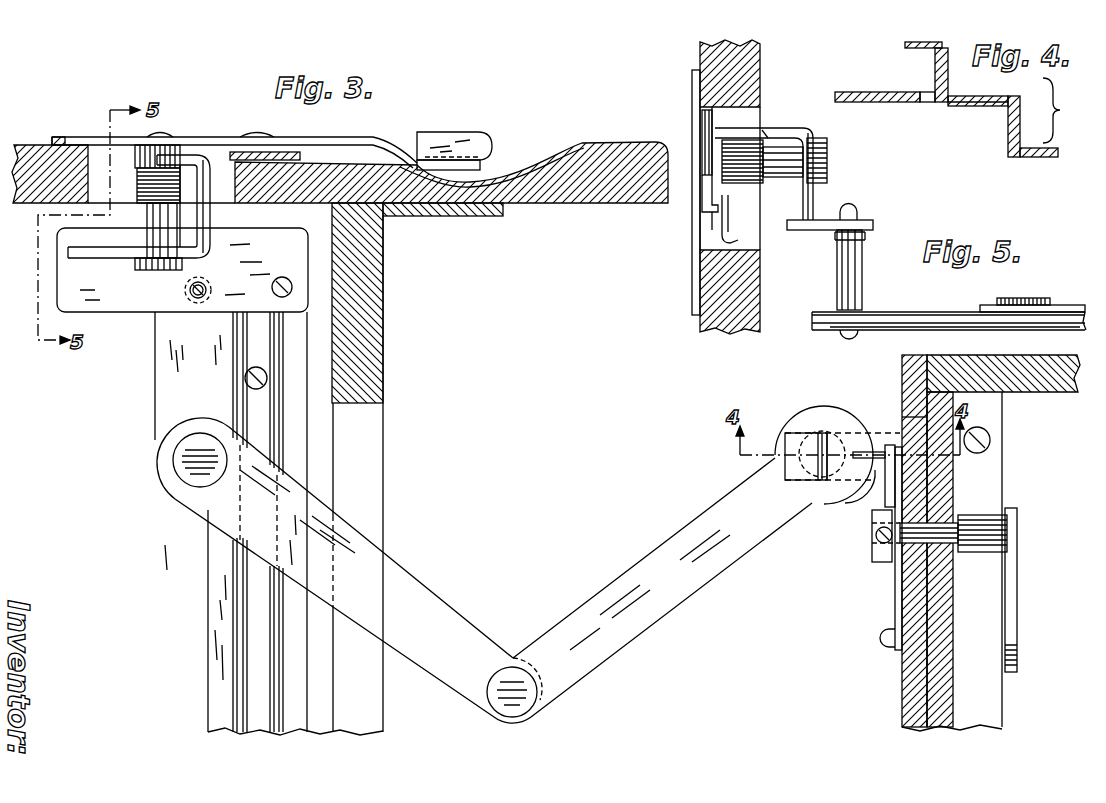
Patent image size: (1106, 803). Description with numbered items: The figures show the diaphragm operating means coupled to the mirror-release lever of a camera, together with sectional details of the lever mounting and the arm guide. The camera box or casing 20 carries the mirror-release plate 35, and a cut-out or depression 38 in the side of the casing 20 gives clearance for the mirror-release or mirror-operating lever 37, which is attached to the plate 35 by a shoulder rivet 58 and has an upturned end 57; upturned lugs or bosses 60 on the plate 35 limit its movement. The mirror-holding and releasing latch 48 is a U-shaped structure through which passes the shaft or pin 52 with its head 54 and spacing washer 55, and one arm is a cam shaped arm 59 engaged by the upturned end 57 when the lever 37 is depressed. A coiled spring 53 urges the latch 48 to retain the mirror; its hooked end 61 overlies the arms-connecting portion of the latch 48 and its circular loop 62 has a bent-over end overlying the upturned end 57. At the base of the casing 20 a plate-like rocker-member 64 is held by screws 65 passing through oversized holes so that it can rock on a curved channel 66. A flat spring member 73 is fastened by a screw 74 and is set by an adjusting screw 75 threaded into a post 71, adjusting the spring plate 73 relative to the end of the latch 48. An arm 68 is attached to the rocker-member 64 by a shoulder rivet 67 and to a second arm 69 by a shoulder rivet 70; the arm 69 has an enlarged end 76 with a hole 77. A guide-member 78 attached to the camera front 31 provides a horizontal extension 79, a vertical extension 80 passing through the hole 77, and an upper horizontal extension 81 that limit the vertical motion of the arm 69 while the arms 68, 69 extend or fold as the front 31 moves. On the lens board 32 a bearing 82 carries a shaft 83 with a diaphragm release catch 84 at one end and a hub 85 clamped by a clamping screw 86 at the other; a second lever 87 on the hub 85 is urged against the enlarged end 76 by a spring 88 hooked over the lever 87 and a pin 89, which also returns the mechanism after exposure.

In FIG. 3, the camera box or casing 20 is at (612, 150).
In FIG. 5, the camera box or casing 20 is at (760, 72).
In FIG. 3, the camera front 31 is at (1035, 390).
In FIG. 3, the lens board 32 is at (953, 672).
In FIG. 5, the mirror-release plate 35 is at (692, 82).
In FIG. 3, the mirror-release or mirror-operating lever 37 is at (452, 133).
In FIG. 3, the cut-out or depression 38 is at (530, 148).
In FIG. 3, the mirror-holding and releasing latch 48 is at (95, 260).
In FIG. 5, the mirror-holding and releasing latch 48 is at (815, 193).
In FIG. 3, the shaft or pin 52 is at (147, 240).
In FIG. 5, the shaft or pin 52 is at (789, 177).
In FIG. 3, the coiled spring 53 is at (142, 182).
In FIG. 5, the coiled spring 53 is at (766, 183).
In FIG. 3, the head 54 is at (160, 272).
In FIG. 5, the head 54 is at (828, 160).
In FIG. 3, the spacing washer 55 is at (172, 146).
In FIG. 5, the spacing washer 55 is at (702, 147).
In FIG. 5, the upturned end 57 is at (712, 220).
In FIG. 3, the shoulder rivet 58 is at (257, 134).
In FIG. 5, the cam shaped arm 59 is at (710, 205).
In FIG. 3, the upturned lugs or bosses 60 is at (392, 138).
In FIG. 3, the hooked end 61 is at (210, 205).
In FIG. 5, the hooked end 61 is at (768, 136).
In FIG. 5, the circular loop 62 is at (736, 239).
In FIG. 3, the rocker-member 64 is at (208, 604).
In FIG. 5, the rocker-member 64 is at (926, 312).
In FIG. 3, the screws 65 is at (250, 370).
In FIG. 3, the curved channel 66 is at (238, 641).
In FIG. 5, the curved channel 66 is at (1060, 325).
In FIG. 3, the shoulder rivet 67 is at (173, 460).
In FIG. 5, the shoulder rivet 67 is at (1022, 298).
In FIG. 3, the arm 68 is at (192, 498).
In FIG. 5, the arm 68 is at (1063, 305).
In FIG. 3, the second arm 69 is at (610, 655).
In FIG. 4, the second arm 69 is at (876, 102).
In FIG. 3, the shoulder rivet 70 is at (514, 718).
In FIG. 3, the post 71 is at (211, 290).
In FIG. 5, the post 71 is at (862, 272).
In FIG. 3, the flat spring member 73 is at (128, 312).
In FIG. 5, the flat spring member 73 is at (815, 230).
In FIG. 3, the screw 74 is at (283, 277).
In FIG. 3, the adjusting screw 75 is at (198, 303).
In FIG. 5, the adjusting screw 75 is at (858, 213).
In FIG. 3, the enlarged end 76 is at (823, 410).
In FIG. 4, the enlarged end 76 is at (985, 97).
In FIG. 3, the hole 77 is at (838, 433).
In FIG. 4, the hole 77 is at (928, 103).
In FIG. 4, the guide-member 78 is at (1067, 110).
In FIG. 3, the horizontal extension 79 is at (870, 505).
In FIG. 4, the horizontal extension 79 is at (978, 106).
In FIG. 4, the vertical extension 80 is at (948, 60).
In FIG. 3, the upper horizontal extension 81 is at (792, 433).
In FIG. 4, the upper horizontal extension 81 is at (922, 42).
In FIG. 3, the bearing 82 is at (976, 515).
In FIG. 3, the shaft 83 is at (950, 560).
In FIG. 3, the diaphragm release catch 84 is at (1017, 575).
In FIG. 3, the hub 85 is at (872, 558).
In FIG. 3, the clamping screw 86 is at (875, 538).
In FIG. 3, the second lever 87 is at (873, 452).
In FIG. 3, the spring 88 is at (895, 602).
In FIG. 3, the pin 89 is at (880, 638).